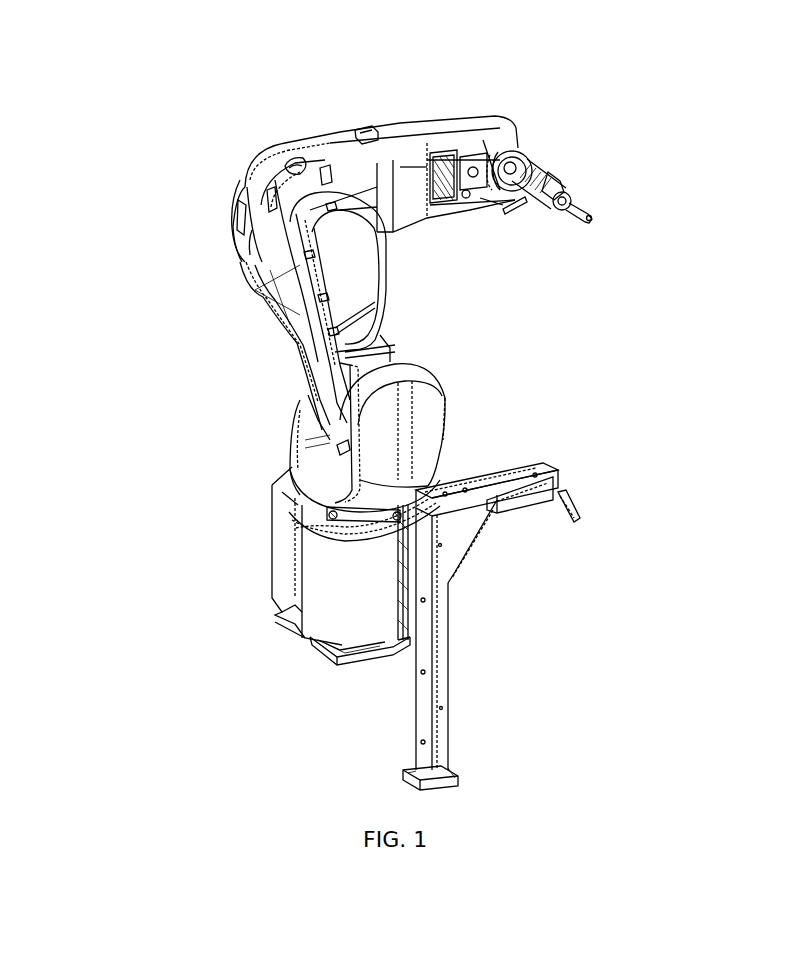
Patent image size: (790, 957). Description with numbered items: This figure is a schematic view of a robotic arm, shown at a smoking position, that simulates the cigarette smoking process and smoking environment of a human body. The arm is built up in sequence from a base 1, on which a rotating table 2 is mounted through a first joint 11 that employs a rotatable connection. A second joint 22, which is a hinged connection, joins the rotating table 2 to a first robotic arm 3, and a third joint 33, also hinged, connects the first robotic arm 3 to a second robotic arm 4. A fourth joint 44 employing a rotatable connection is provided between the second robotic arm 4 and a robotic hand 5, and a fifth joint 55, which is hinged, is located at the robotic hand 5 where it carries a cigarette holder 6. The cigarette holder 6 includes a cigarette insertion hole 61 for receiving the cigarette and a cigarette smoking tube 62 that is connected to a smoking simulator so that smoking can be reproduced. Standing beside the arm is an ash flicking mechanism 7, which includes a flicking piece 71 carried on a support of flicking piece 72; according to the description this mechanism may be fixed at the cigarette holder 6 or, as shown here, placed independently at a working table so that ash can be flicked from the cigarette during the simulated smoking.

The base 1 is at (305, 583).
The first joint 11 is at (320, 515).
The rotating table 2 is at (318, 451).
The second joint 22 is at (340, 394).
The first robotic arm 3 is at (300, 293).
The third joint 33 is at (248, 220).
The second robotic arm 4 is at (306, 162).
The fourth joint 44 is at (395, 130).
The robotic hand 5 is at (462, 122).
The fifth joint 55 is at (513, 150).
The cigarette holder 6 is at (545, 177).
The cigarette insertion hole 61 is at (568, 203).
The cigarette smoking tube 62 is at (523, 197).
The ash flicking mechanism 7 is at (447, 596).
The flicking piece 71 is at (570, 504).
The support of flicking piece 72 is at (437, 668).